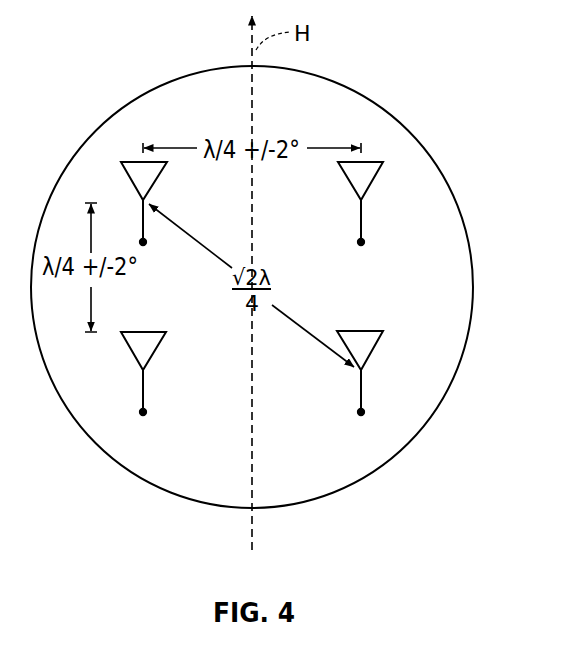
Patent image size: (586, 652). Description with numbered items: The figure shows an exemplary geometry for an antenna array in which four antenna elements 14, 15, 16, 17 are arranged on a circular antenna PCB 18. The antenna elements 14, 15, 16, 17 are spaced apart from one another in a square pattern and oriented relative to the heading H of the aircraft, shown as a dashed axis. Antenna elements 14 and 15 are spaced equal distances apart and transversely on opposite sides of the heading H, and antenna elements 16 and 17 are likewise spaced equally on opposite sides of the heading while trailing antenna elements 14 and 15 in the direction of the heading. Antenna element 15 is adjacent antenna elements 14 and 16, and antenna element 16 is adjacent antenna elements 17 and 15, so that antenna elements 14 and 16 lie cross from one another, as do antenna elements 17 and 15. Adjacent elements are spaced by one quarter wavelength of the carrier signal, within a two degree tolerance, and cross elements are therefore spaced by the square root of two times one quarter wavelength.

The antenna element 14 is at (130, 181).
The antenna element 15 is at (368, 172).
The antenna element 16 is at (367, 343).
The antenna element 17 is at (138, 343).
The antenna PCB 18 is at (133, 103).